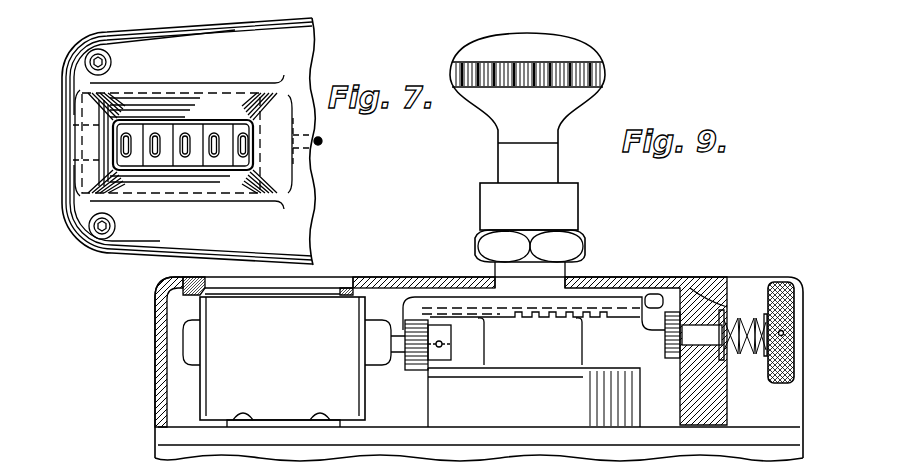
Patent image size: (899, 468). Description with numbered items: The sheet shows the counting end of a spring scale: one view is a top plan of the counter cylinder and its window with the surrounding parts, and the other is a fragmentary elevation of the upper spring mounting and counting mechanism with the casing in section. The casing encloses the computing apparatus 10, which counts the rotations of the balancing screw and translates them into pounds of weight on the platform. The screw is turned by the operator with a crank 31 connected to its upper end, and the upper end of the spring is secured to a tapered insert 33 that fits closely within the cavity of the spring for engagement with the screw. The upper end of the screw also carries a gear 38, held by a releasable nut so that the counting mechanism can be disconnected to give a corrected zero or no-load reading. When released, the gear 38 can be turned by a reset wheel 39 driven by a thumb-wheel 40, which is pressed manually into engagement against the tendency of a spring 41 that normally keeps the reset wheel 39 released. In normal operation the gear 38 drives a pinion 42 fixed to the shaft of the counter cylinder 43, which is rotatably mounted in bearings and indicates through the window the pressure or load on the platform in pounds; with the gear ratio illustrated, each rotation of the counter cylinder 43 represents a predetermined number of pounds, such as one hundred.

In FIG. 7, the computing apparatus 10 is at (192, 141).
In FIG. 9, the computing apparatus 10 is at (479, 361).
In FIG. 9, the crank 31 is at (558, 165).
In FIG. 9, the insert 33 is at (430, 403).
In FIG. 9, the gear 38 is at (590, 318).
In FIG. 9, the reset wheel 39 is at (652, 326).
In FIG. 9, the thumb-wheel 40 is at (781, 282).
In FIG. 9, the spring 41 is at (735, 312).
In FIG. 9, the pinion 42 is at (415, 372).
In FIG. 7, the counter cylinder 43 is at (228, 192).
In FIG. 9, the counter cylinder 43 is at (340, 321).